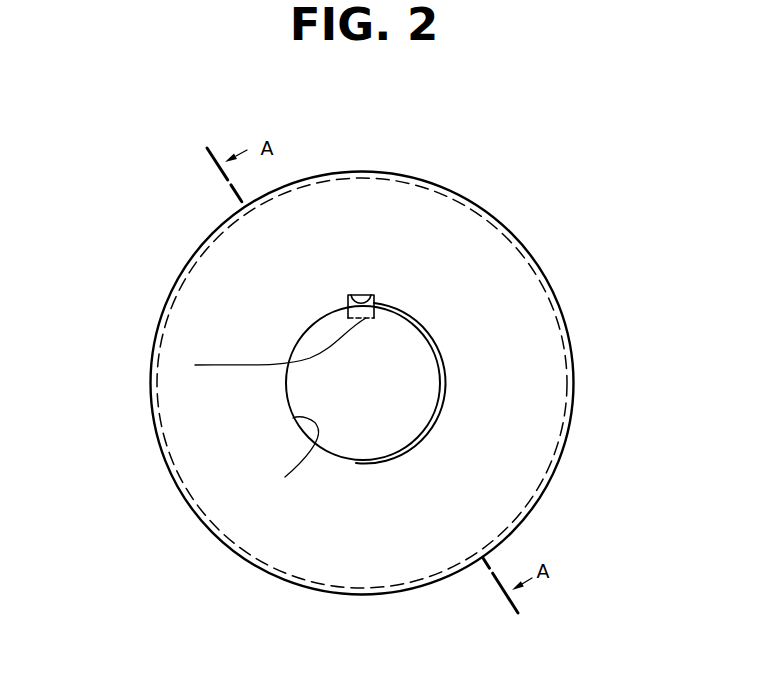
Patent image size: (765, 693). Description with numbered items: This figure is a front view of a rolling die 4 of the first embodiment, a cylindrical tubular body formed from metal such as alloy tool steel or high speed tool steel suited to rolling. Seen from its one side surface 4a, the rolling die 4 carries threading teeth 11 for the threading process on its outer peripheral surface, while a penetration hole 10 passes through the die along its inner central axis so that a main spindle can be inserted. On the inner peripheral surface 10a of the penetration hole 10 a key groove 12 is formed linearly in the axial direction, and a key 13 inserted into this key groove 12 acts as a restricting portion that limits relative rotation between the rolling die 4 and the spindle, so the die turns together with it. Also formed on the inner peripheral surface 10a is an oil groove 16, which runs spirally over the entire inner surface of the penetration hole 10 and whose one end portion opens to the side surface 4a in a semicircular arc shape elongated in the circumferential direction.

The rolling die 4 is at (374, 368).
The one side surface 4a is at (453, 228).
The penetration hole 10 is at (347, 437).
The inner peripheral surface 10a is at (285, 477).
The threading teeth 11 is at (180, 278).
The key groove 12 is at (357, 295).
The key 13 is at (195, 365).
The oil groove 16 is at (440, 350).